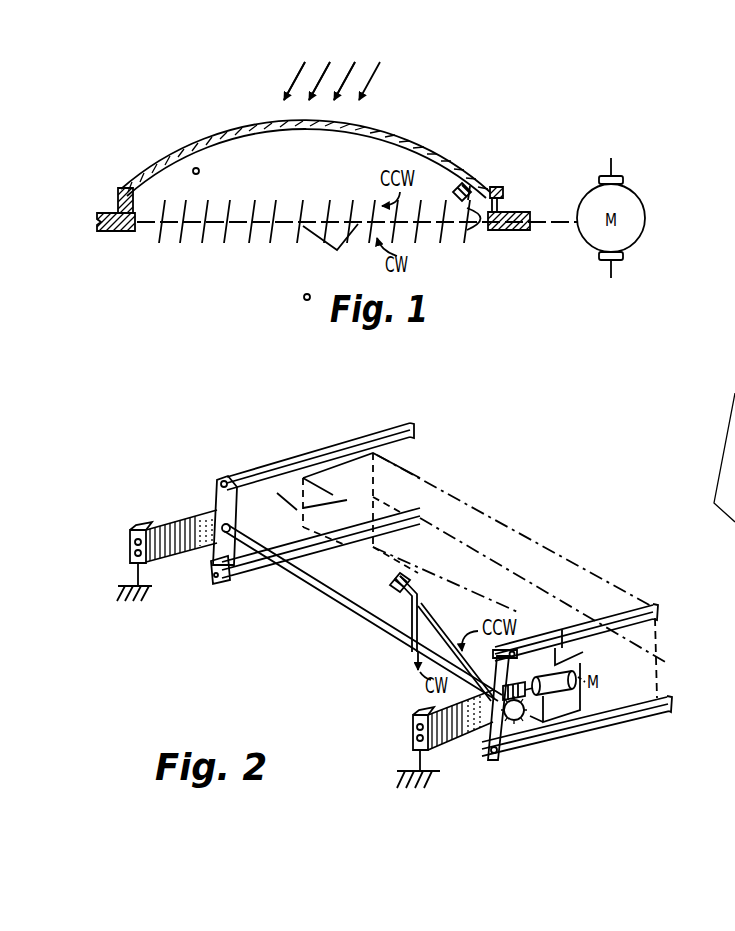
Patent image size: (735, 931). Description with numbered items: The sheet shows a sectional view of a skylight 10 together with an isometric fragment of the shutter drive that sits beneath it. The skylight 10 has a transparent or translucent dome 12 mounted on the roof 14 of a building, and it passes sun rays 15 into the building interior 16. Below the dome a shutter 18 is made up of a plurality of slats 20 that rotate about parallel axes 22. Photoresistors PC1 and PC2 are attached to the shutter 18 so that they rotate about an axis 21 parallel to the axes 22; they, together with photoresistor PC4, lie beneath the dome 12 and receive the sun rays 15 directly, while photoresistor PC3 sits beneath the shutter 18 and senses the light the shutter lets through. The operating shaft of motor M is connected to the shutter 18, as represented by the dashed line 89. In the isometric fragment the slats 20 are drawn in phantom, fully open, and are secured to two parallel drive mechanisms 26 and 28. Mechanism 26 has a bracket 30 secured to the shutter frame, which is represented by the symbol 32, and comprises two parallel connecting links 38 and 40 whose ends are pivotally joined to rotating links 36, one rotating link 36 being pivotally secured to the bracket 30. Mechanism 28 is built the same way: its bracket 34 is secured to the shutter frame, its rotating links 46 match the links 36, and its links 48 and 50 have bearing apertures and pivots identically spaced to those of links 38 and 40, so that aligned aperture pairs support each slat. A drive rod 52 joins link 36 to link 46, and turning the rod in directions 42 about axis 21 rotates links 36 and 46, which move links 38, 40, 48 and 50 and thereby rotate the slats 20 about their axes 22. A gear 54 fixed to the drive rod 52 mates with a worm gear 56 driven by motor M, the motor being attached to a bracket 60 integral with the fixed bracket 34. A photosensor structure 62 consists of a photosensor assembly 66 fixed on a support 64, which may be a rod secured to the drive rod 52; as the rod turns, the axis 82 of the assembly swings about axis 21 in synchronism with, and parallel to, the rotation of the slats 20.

In FIG. 1, the skylight 10 is at (230, 116).
In FIG. 1, the dome 12 is at (432, 148).
In FIG. 1, the roof 14 is at (106, 233).
In FIG. 1, the sun rays 15 is at (372, 84).
In FIG. 1, the building interior 16 is at (258, 287).
In FIG. 1, the shutter 18 is at (196, 243).
In FIG. 2, the shutter 18 is at (270, 614).
In FIG. 1, the slats 20 is at (258, 204).
In FIG. 2, the slats 20 is at (347, 500).
In FIG. 1, the axis 21 is at (446, 228).
In FIG. 2, the axis 21 is at (173, 493).
In FIG. 1, the parallel axes 22 is at (337, 250).
In FIG. 2, the parallel axes 22 is at (282, 507).
In FIG. 2, the drive mechanism 26 is at (207, 495).
In FIG. 2, the drive mechanism 28 is at (462, 700).
In FIG. 2, the bracket 30 is at (130, 545).
In FIG. 2, the symbol 32 is at (148, 603).
In FIG. 2, the bracket 34 is at (412, 733).
In FIG. 2, the rotating links 36 is at (210, 560).
In FIG. 2, the connecting link 38 is at (263, 470).
In FIG. 2, the connecting link 40 is at (253, 570).
In FIG. 2, the directions 42 is at (414, 660).
In FIG. 2, the rotating links 46 is at (512, 758).
In FIG. 2, the link 48 is at (597, 624).
In FIG. 2, the link 50 is at (643, 716).
In FIG. 2, the drive rod 52 is at (328, 600).
In FIG. 2, the gear 54 is at (550, 737).
In FIG. 2, the worm gear 56 is at (474, 733).
In FIG. 2, the bracket 60 is at (562, 630).
In FIG. 1, the photosensor structure 62 is at (503, 193).
In FIG. 2, the photosensor structure 62 is at (465, 597).
In FIG. 1, the support 64 is at (467, 226).
In FIG. 2, the support 64 is at (425, 627).
In FIG. 2, the photosensor assembly 66 is at (415, 589).
In FIG. 1, the axis 82 is at (469, 186).
In FIG. 2, the axis 82 is at (397, 622).
In FIG. 1, the dashed line 89 is at (141, 228).
In FIG. 1, the photoresistor PC1 is at (472, 190).
In FIG. 2, the photoresistor PC1 is at (393, 576).
In FIG. 1, the photoresistor PC2 is at (461, 190).
In FIG. 2, the photoresistor PC2 is at (407, 577).
In FIG. 1, the photoresistor PC3 is at (305, 300).
In FIG. 1, the photoresistor PC4 is at (199, 173).